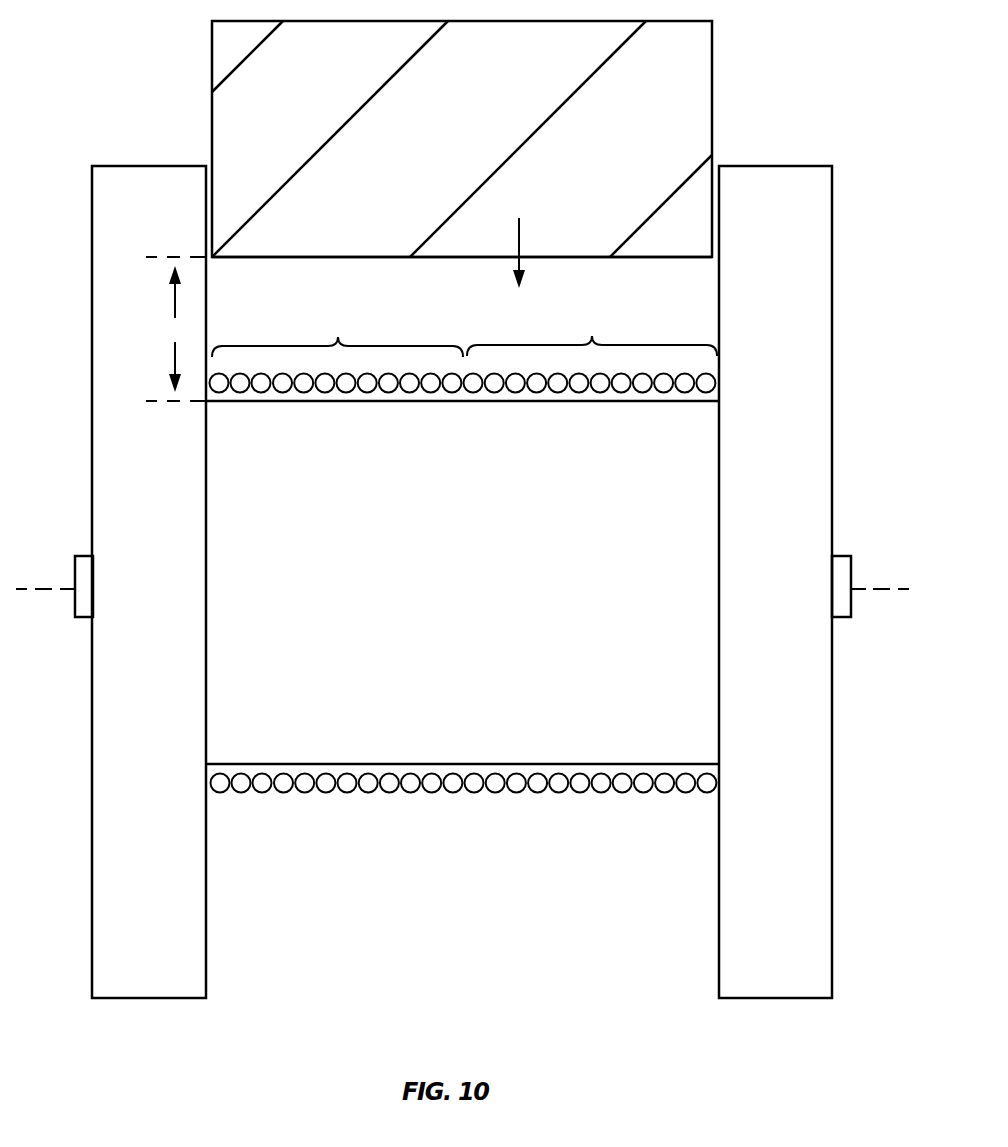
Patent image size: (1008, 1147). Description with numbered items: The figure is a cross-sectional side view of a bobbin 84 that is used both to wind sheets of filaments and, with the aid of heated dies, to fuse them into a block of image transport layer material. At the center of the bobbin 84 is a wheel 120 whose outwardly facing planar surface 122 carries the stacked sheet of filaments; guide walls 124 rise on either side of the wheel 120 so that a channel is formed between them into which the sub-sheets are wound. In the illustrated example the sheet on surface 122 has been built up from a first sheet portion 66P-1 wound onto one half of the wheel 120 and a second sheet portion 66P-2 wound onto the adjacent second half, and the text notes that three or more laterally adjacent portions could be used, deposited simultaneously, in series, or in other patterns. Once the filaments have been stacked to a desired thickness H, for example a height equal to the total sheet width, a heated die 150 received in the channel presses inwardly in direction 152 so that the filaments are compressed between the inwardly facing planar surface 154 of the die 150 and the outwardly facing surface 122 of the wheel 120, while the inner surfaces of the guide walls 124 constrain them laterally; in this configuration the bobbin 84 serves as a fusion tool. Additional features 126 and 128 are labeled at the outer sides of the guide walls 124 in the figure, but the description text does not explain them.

The bobbin 84 is at (72, 105).
The die 150 is at (712, 75).
The direction 152 is at (520, 232).
The inwardly facing planar surface 154 is at (442, 258).
The guide walls 124 is at (105, 211).
The wheel 120 is at (320, 645).
The tabs 126 is at (75, 603).
The reference plane 128 is at (41, 588).
The outwardly facing planar surface 122 is at (412, 392).
The first sheet portion 66P-1 is at (337, 336).
The second sheet portion 66P-2 is at (592, 335).
The thickness H is at (176, 329).